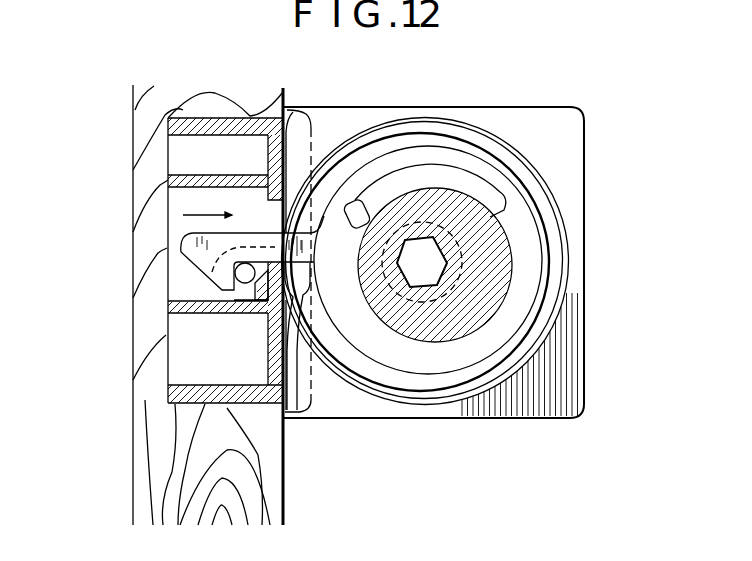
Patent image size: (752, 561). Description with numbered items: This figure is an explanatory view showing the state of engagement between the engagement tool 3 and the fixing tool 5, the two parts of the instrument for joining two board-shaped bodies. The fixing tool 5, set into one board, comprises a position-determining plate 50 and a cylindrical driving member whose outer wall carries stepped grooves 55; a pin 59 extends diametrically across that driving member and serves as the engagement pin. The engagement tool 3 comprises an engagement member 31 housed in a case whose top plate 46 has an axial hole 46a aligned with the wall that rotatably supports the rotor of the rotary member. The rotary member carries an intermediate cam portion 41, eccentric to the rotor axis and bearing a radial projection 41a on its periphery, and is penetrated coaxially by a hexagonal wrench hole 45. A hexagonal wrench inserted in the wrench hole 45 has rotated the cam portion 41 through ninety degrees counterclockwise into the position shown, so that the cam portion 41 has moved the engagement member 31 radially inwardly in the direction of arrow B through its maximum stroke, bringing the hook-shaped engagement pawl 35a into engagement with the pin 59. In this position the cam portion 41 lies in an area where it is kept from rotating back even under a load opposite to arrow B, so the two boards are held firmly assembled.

The engagement tool 3 is at (424, 432).
The fixing tool 5 is at (189, 411).
The engagement member 31 is at (284, 233).
The engagement pawl 35a is at (183, 256).
The cam portion 41 is at (495, 194).
The radial projection 41a is at (358, 208).
The wrench hole 45 is at (432, 258).
The top plate 46 is at (337, 413).
The axial hole 46a is at (500, 312).
The position-determining plate 50 is at (315, 120).
The stepped grooves 55 is at (187, 113).
The pin 59 is at (200, 318).